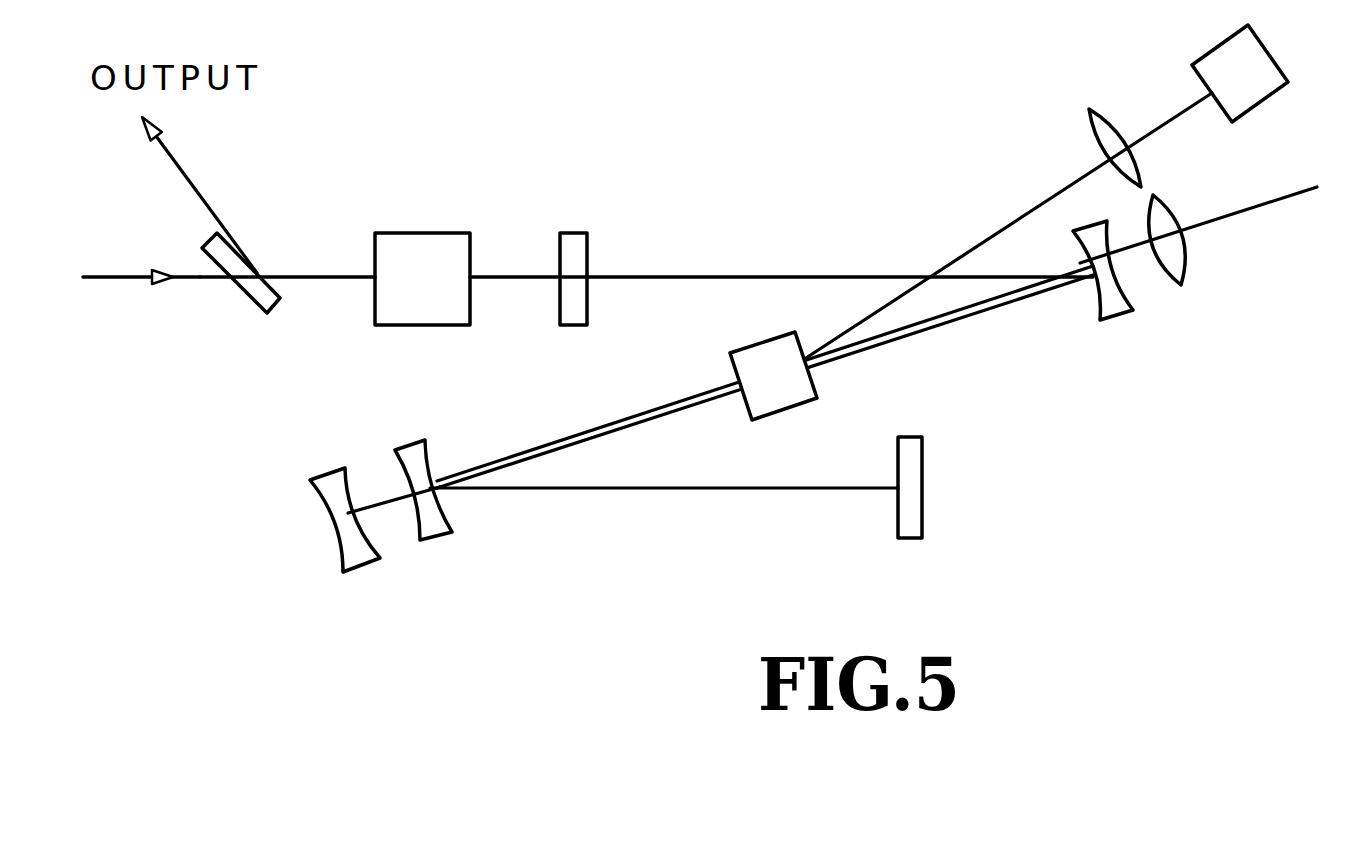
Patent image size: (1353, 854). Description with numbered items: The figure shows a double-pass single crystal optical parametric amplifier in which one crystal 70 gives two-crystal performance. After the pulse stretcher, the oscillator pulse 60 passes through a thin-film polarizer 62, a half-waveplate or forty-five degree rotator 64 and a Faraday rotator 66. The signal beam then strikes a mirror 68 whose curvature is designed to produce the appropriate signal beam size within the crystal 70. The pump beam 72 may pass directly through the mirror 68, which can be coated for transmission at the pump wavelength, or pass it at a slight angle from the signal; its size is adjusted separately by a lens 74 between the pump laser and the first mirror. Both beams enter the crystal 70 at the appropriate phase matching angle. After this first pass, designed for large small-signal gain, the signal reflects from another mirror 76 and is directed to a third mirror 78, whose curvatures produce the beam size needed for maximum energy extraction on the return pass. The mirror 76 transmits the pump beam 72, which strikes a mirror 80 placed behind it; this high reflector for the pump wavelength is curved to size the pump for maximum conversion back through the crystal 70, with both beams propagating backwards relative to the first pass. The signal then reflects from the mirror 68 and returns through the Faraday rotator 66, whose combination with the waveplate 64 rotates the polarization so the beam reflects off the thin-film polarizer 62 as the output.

The oscillator pulse 60 is at (135, 314).
The thin-film polarizer 62 is at (241, 303).
The half-waveplate 64 is at (605, 236).
The Faraday rotator 66 is at (424, 234).
The mirror 68 is at (1074, 306).
The crystal 70 is at (748, 360).
The pump beam 72 is at (1202, 193).
The lens 74 is at (1226, 261).
The mirror 76 is at (436, 531).
The mirror 78 is at (960, 491).
The mirror 80 is at (319, 548).